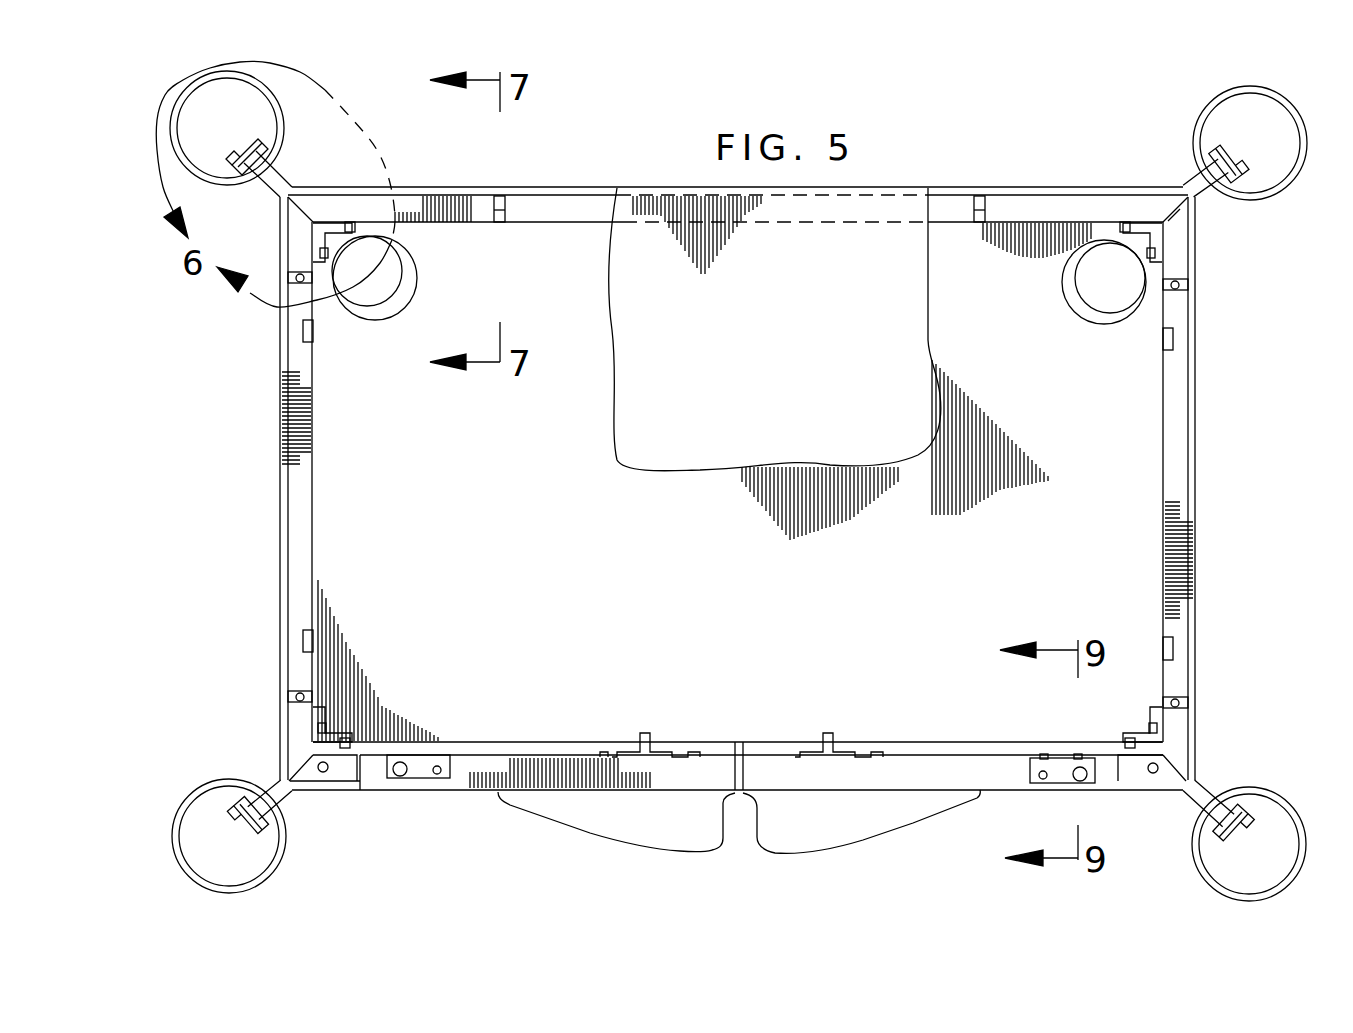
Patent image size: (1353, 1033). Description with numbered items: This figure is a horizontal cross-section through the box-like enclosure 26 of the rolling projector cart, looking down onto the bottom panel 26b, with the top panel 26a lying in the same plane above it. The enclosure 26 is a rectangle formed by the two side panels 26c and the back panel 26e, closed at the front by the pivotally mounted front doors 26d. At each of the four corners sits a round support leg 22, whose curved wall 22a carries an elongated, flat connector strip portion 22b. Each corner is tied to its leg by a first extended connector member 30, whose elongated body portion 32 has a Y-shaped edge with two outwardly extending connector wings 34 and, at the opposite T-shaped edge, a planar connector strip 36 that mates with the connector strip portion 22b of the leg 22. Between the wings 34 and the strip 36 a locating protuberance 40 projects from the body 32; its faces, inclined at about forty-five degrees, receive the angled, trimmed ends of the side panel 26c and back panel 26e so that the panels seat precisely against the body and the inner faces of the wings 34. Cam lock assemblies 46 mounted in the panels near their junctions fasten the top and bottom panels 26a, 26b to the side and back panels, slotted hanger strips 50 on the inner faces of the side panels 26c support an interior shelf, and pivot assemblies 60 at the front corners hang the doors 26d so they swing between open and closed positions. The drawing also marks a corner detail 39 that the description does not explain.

The support member 22 is at (297, 138).
The curved wall 22a is at (280, 108).
The connector strip portion 22b is at (251, 148).
The enclosure 26 is at (1150, 412).
The top panel 26a is at (828, 364).
The bottom panel 26b is at (752, 577).
The side panel 26c is at (300, 492).
The front door 26d is at (597, 791).
The back panel 26e is at (552, 222).
The first extended connector member 30 is at (262, 190).
The elongated body portion 32 is at (300, 197).
The connector wings 34 is at (350, 232).
The connector strip 36 is at (243, 158).
The notch 39 is at (1165, 220).
The locating protuberance 40 is at (282, 200).
The cam lock assembly 46 is at (297, 278).
The slotted hanger strip 50 is at (313, 333).
The pivot assembly 60 is at (421, 758).